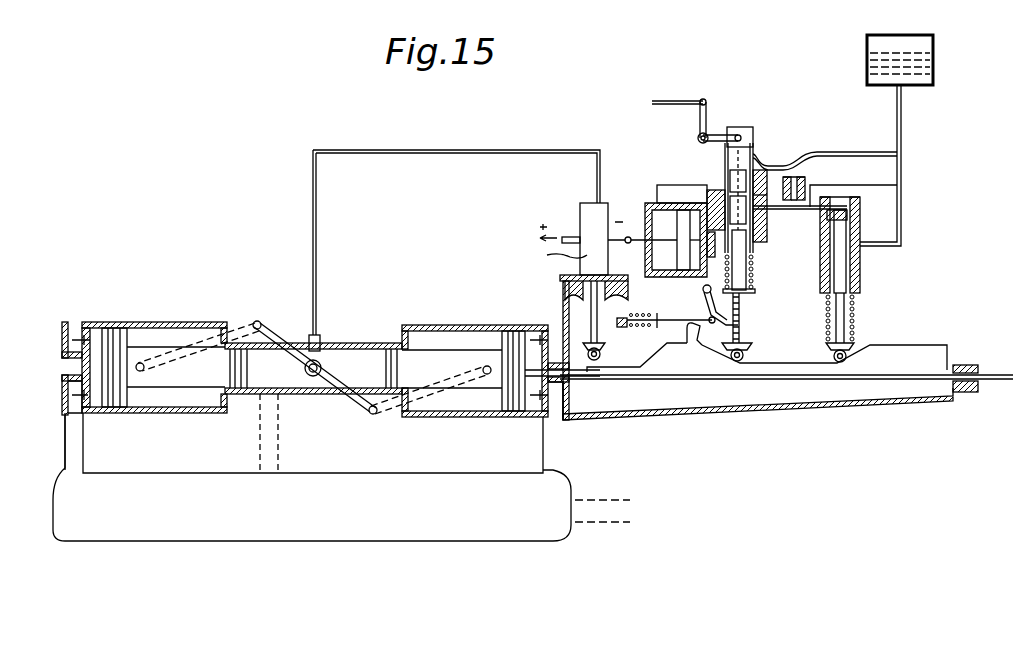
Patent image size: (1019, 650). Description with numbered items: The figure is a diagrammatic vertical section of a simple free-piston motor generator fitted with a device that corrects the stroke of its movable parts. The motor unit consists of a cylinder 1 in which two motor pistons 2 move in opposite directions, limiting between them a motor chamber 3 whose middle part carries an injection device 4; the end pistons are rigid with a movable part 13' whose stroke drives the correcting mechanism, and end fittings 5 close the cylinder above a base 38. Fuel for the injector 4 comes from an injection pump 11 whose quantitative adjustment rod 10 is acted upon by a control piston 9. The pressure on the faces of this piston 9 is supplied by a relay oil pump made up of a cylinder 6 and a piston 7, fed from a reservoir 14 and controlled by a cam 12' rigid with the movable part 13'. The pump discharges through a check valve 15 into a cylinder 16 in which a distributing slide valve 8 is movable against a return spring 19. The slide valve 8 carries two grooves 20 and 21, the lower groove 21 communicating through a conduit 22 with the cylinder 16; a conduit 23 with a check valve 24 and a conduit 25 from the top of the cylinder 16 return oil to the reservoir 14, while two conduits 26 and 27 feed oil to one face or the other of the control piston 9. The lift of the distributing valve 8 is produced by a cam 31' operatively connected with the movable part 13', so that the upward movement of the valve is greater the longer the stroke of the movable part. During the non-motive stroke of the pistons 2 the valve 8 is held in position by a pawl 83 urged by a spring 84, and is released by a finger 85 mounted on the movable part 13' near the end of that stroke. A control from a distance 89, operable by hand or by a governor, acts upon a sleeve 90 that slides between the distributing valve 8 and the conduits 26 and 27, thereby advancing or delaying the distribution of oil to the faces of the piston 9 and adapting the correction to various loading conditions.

The cylinder 1 is at (297, 396).
The motor pistons 2 is at (194, 386).
The motor chamber 3 is at (262, 376).
The injection device 4 is at (320, 335).
The cylinder end fitting 5 is at (96, 408).
The cylinder 6 is at (862, 227).
The piston 7 is at (846, 272).
The slide valve 8 is at (728, 180).
The control piston 9 is at (675, 256).
The quantitative adjustment rod 10 is at (612, 218).
The injection pump 11 is at (552, 255).
The cam 12' is at (782, 349).
The movable part 13' is at (758, 409).
The reservoir 14 is at (935, 55).
The check valve 15 is at (848, 208).
The cylinder 16 is at (735, 158).
The return spring 19 is at (757, 282).
The groove 20 is at (782, 167).
The groove 21 is at (755, 250).
The conduit 22 is at (765, 165).
The conduit 23 is at (778, 210).
The check valve 24 is at (793, 201).
The conduit 25 is at (840, 151).
The conduit 26 is at (657, 187).
The conduit 27 is at (692, 265).
The cam 31' is at (786, 406).
The base 38 is at (345, 520).
The pawl 83 is at (740, 320).
The spring 84 is at (645, 326).
The finger 85 is at (688, 335).
The control from a distance 89 is at (672, 100).
The sleeve 90 is at (755, 128).